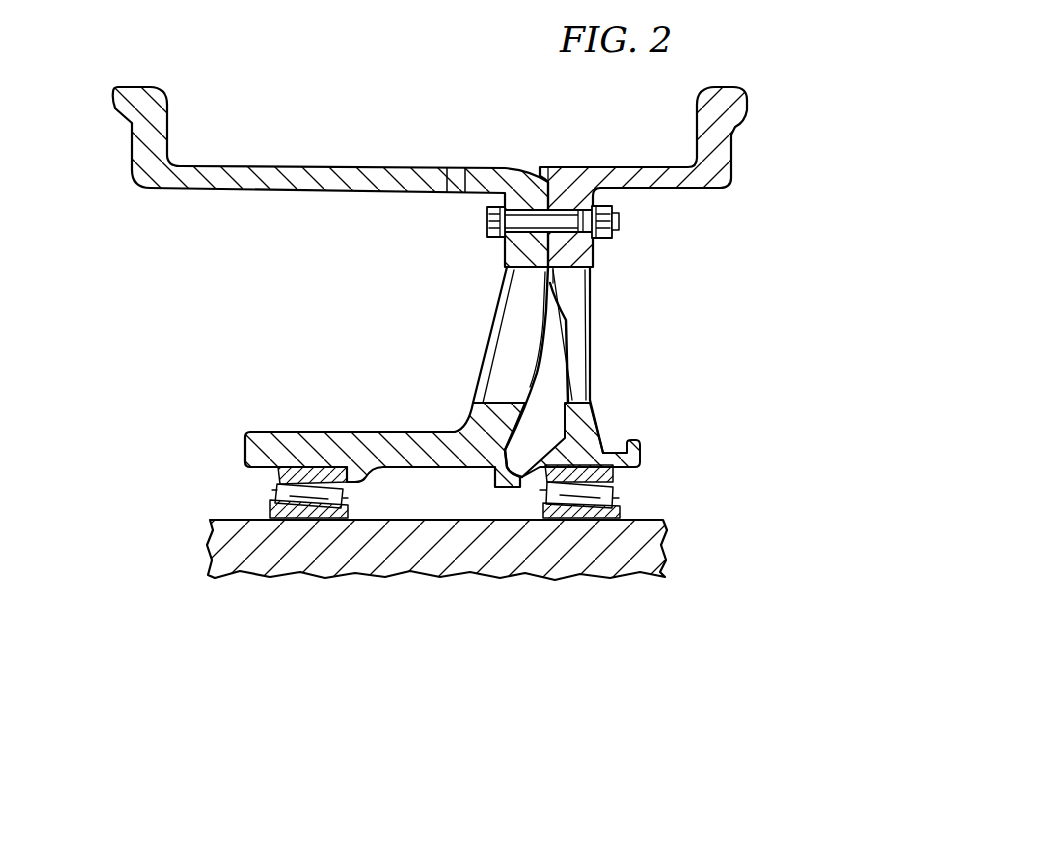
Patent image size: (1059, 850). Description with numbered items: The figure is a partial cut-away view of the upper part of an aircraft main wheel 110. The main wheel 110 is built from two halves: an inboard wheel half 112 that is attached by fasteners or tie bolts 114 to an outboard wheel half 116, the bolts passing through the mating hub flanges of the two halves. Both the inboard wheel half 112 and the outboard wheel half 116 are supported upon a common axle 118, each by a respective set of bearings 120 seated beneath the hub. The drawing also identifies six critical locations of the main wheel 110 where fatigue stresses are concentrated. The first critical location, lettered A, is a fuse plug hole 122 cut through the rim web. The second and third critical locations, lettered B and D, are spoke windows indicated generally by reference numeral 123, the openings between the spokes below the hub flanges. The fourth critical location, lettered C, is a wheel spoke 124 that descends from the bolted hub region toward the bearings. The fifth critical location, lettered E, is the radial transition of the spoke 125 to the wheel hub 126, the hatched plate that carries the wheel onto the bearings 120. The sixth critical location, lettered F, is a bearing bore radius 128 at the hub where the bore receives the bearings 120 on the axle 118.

The main wheel 110 is at (305, 58).
The inboard wheel half 112 is at (131, 143).
The tie bolts 114 is at (627, 221).
The outboard wheel half 116 is at (733, 143).
The axle 118 is at (666, 550).
The bearings 120 is at (268, 502).
The fuse plug hole 122 is at (455, 180).
The spoke windows 123 is at (455, 318).
The wheel spoke 124 is at (622, 362).
The spoke 125 is at (368, 335).
The wheel hub 126 is at (285, 432).
The bearing bore radius 128 is at (348, 432).